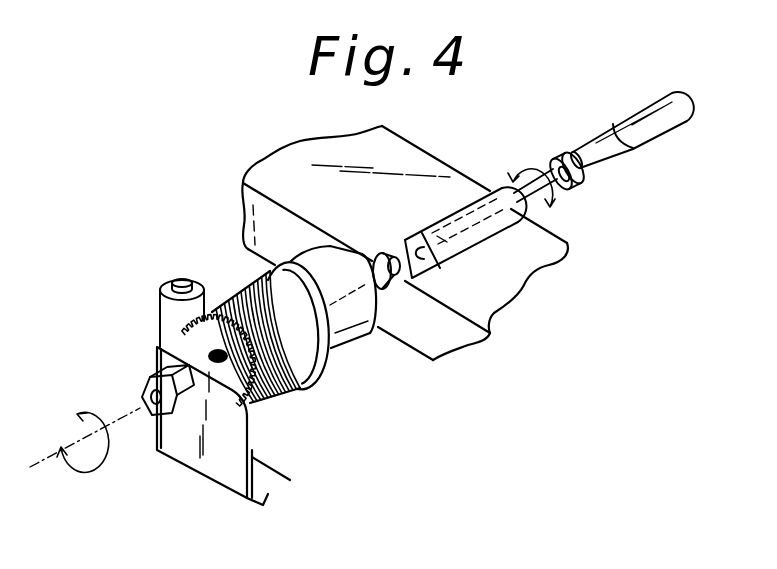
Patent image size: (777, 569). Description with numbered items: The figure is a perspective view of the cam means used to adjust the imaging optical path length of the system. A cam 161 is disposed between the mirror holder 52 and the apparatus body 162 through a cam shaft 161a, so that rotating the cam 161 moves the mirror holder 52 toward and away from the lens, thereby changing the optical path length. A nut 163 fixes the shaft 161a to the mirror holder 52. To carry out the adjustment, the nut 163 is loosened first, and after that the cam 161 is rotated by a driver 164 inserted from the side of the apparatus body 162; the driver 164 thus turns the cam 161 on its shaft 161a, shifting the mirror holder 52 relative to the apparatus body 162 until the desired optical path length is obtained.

The mirror holder 52 is at (216, 498).
The cam 161 is at (346, 371).
The cam shaft 161a is at (381, 280).
The apparatus body 162 is at (527, 263).
The nut 163 is at (157, 418).
The driver 164 is at (596, 146).